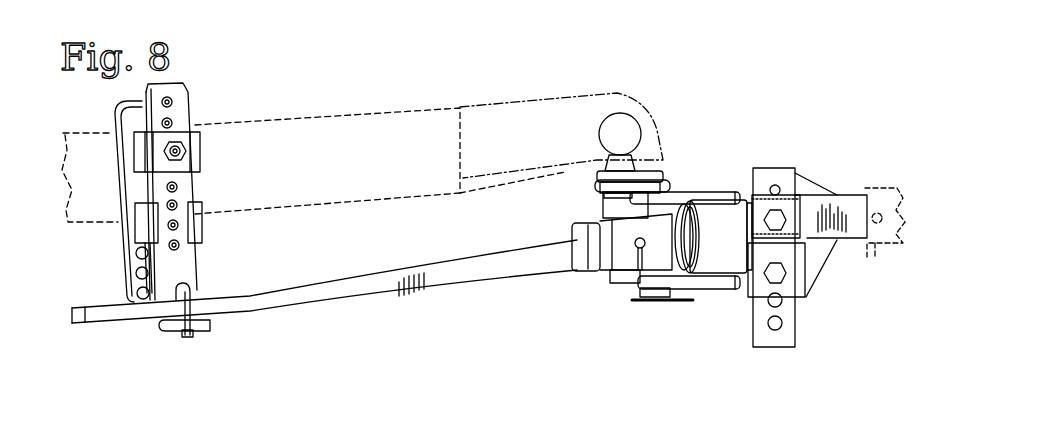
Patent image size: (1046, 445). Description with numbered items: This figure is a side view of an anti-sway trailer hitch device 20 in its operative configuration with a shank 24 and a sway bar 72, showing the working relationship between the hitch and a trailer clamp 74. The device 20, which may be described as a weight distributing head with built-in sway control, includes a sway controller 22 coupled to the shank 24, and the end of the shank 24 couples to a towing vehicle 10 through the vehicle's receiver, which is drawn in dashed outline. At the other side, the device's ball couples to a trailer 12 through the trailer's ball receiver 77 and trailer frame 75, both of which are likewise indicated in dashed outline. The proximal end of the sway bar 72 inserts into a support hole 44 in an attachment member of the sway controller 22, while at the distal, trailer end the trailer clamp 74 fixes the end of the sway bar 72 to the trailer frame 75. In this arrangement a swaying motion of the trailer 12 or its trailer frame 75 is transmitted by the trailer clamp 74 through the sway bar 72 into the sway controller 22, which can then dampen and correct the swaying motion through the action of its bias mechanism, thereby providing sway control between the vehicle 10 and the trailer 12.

The vehicle 10 is at (891, 187).
The trailer 12 is at (373, 69).
The anti-sway trailer hitch device 20 is at (761, 113).
The sway controller 22 is at (617, 296).
The shank 24 is at (853, 195).
The support hole 44 is at (563, 236).
The sway bar 72 is at (343, 290).
The trailer clamp 74 is at (192, 355).
The trailer frame 75 is at (266, 118).
The ball receiver 77 is at (616, 86).